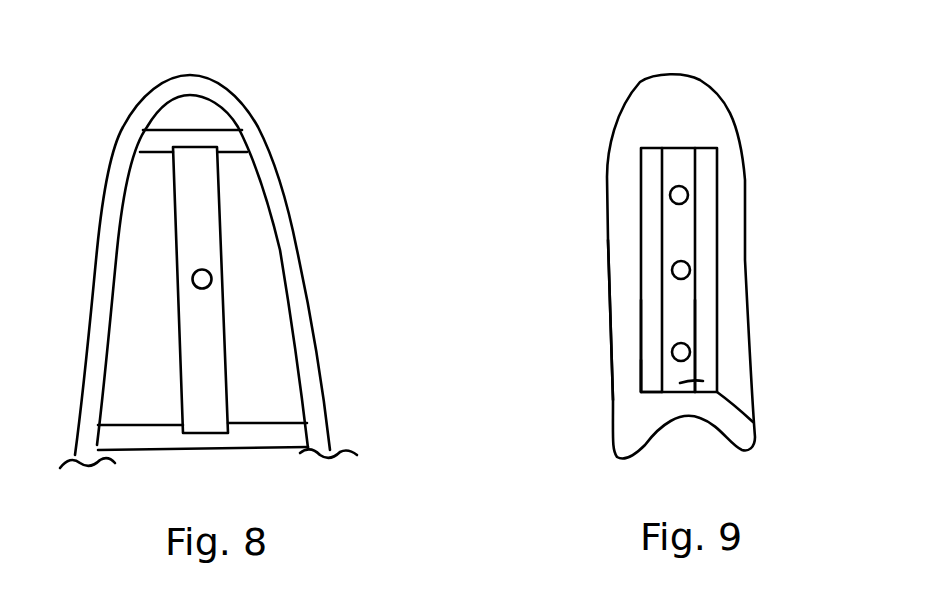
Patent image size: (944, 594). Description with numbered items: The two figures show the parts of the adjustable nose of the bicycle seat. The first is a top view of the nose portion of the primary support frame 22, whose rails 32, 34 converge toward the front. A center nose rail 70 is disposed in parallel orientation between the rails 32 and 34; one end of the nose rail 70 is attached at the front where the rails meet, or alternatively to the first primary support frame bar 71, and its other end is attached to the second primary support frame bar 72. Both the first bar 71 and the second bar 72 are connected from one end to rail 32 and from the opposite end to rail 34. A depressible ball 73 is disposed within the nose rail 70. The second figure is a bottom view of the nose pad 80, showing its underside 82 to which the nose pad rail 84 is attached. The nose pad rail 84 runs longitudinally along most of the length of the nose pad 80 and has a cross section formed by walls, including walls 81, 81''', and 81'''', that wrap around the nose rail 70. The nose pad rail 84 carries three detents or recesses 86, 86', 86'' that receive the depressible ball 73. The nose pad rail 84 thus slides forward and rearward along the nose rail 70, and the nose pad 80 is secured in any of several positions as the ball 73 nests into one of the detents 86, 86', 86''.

In FIG. 8, the primary support frame 22 is at (80, 463).
In FIG. 8, the rail 32 is at (313, 353).
In FIG. 8, the rail 34 is at (110, 205).
In FIG. 8, the nose rail 70 is at (227, 328).
In FIG. 8, the first primary support frame bar 71 is at (210, 130).
In FIG. 8, the second primary support frame bar 72 is at (263, 433).
In FIG. 8, the depressible ball 73 is at (210, 271).
In FIG. 9, the nose pad 80 is at (560, 167).
In FIG. 9, the wall 81 is at (730, 293).
In FIG. 9, the wall 81''' is at (766, 346).
In FIG. 9, the wall 81'''' is at (588, 346).
In FIG. 9, the underside 82 is at (613, 235).
In FIG. 9, the nose pad rail 84 is at (645, 378).
In FIG. 9, the detent 86 is at (730, 175).
In FIG. 9, the detent 86' is at (736, 259).
In FIG. 9, the detent 86'' is at (742, 344).